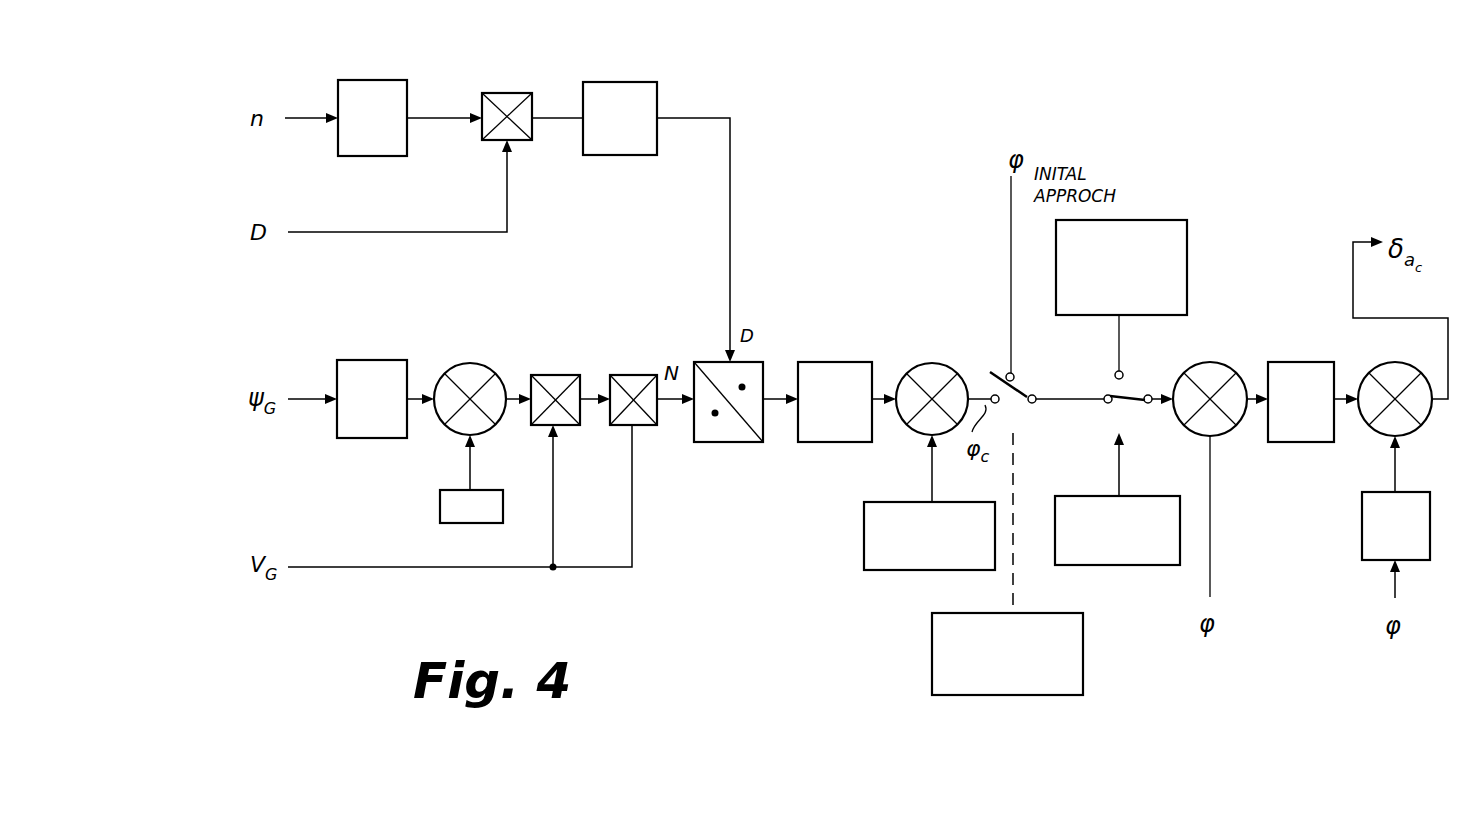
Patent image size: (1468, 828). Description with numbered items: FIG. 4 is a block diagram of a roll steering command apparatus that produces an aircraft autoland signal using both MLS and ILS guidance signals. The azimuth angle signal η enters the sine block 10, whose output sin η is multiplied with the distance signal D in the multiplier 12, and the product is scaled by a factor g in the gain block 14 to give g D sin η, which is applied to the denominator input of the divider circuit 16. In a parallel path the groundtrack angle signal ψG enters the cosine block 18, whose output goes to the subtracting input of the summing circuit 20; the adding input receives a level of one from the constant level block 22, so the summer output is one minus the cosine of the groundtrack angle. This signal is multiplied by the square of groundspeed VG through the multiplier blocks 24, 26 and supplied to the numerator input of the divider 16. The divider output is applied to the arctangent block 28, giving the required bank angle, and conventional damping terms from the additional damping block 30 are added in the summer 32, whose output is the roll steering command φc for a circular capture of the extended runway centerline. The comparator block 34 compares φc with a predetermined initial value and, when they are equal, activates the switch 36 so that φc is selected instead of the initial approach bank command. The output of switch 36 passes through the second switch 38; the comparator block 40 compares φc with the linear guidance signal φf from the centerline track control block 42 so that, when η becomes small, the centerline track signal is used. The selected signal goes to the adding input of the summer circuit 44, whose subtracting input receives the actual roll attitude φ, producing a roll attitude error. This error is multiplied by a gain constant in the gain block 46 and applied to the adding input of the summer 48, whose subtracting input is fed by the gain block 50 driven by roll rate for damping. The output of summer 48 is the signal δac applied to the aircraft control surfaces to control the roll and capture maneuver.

The sine block 10 is at (385, 80).
The multiplier 12 is at (510, 93).
The gain block g 14 is at (616, 82).
The divider circuit 16 is at (752, 362).
The cosine block 18 is at (383, 360).
The summing circuit 20 is at (476, 364).
The constant level block 22 is at (440, 506).
The multiplier block 24 is at (556, 375).
The multiplier block 26 is at (627, 375).
The arctangent block 28 is at (830, 362).
The additional damping block 30 is at (864, 548).
The summer 32 is at (920, 363).
The comparator block 34 is at (1030, 695).
The switch 36 is at (1022, 390).
The second switch 38 is at (1128, 390).
The comparator block 40 is at (1128, 565).
The centerline track control block 42 is at (1156, 220).
The summer circuit 44 is at (1218, 364).
The gain block Kφ 46 is at (1296, 362).
The summer 48 is at (1422, 428).
The gain block 50 is at (1362, 530).